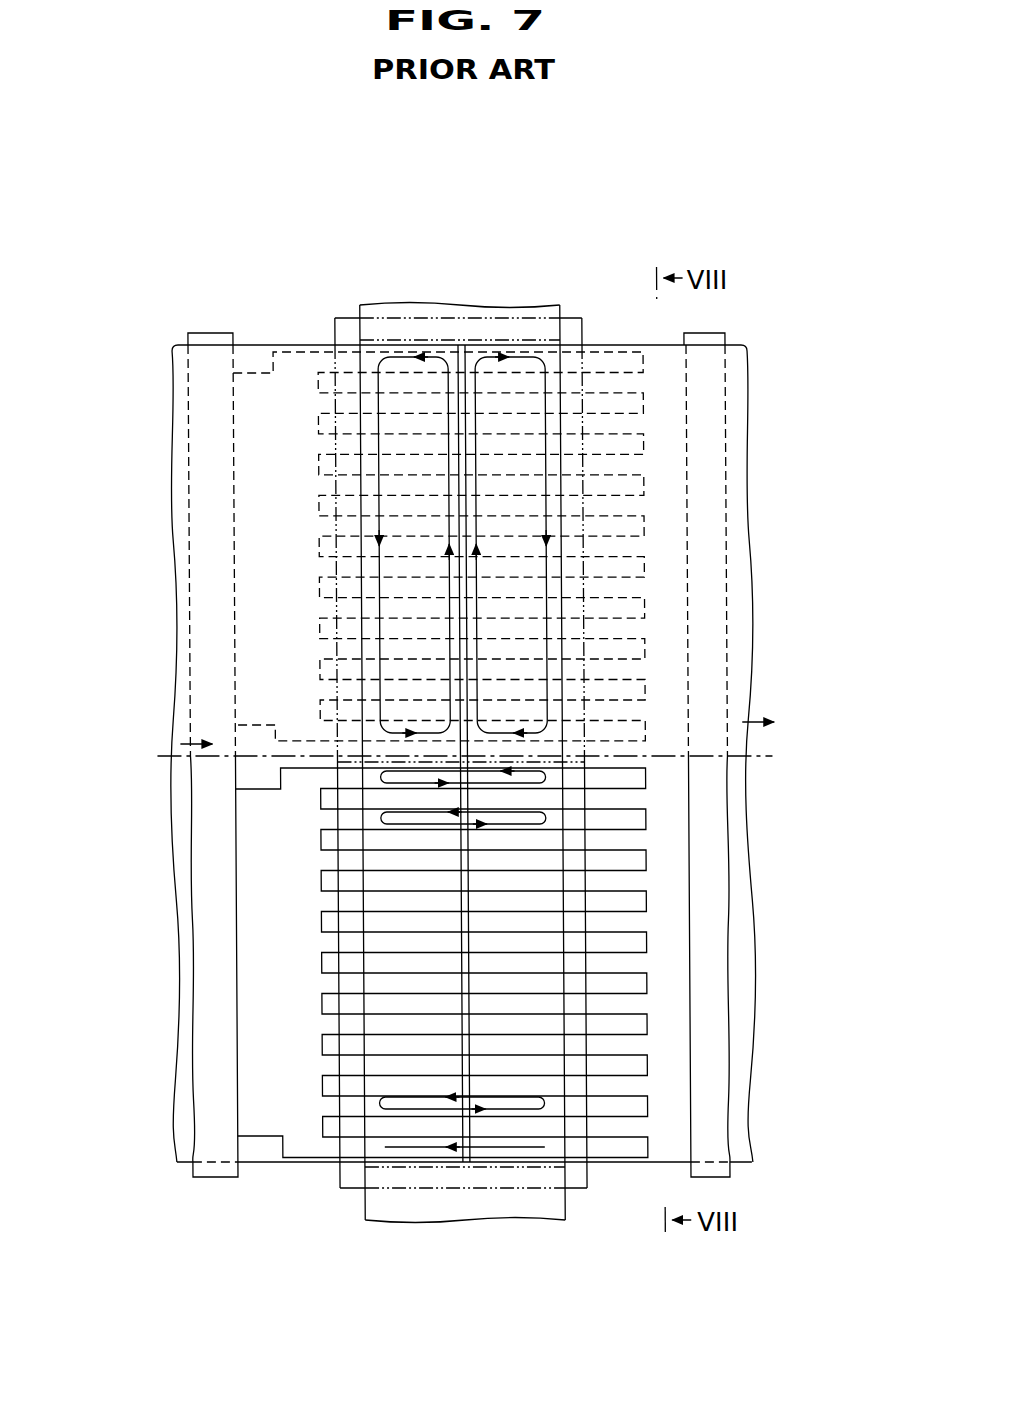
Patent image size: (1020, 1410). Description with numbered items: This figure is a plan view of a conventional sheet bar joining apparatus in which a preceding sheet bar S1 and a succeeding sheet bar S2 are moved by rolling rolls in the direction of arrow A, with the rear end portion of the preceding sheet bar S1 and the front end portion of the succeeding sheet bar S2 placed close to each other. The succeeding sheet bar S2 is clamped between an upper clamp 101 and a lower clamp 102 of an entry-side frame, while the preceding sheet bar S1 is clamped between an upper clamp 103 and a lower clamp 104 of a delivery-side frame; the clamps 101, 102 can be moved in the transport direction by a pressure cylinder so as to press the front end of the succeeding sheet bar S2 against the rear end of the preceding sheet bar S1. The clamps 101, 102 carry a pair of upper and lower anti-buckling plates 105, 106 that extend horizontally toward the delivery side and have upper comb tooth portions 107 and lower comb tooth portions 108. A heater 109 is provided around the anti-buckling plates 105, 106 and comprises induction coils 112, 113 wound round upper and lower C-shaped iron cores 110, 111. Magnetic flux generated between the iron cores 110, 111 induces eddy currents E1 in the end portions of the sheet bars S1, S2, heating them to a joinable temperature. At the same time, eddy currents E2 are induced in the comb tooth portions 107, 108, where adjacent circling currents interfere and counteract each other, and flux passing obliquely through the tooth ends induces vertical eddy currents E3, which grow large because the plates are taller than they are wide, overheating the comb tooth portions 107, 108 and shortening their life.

The upper clamp 101 is at (206, 1176).
The lower clamp 102 is at (227, 760).
The upper clamp 103 is at (720, 1172).
The lower clamp 104 is at (752, 765).
The anti-buckling plate 105 is at (311, 1170).
The anti-buckling plate 106 is at (462, 776).
The upper comb tooth portions 107 is at (640, 1142).
The lower comb tooth portions 108 is at (643, 362).
The heater 109 is at (575, 304).
The C-shaped iron core 110 is at (468, 760).
The C-shaped iron core 111 is at (528, 340).
The induction coil 112 is at (443, 732).
The induction coil 113 is at (347, 318).
The preceding sheet bar S1 is at (738, 350).
The succeeding sheet bar S2 is at (262, 344).
The eddy currents E1 is at (430, 352).
The eddy currents E2 is at (377, 778).
The eddy currents E3 is at (390, 1147).
The direction of transport A is at (750, 722).